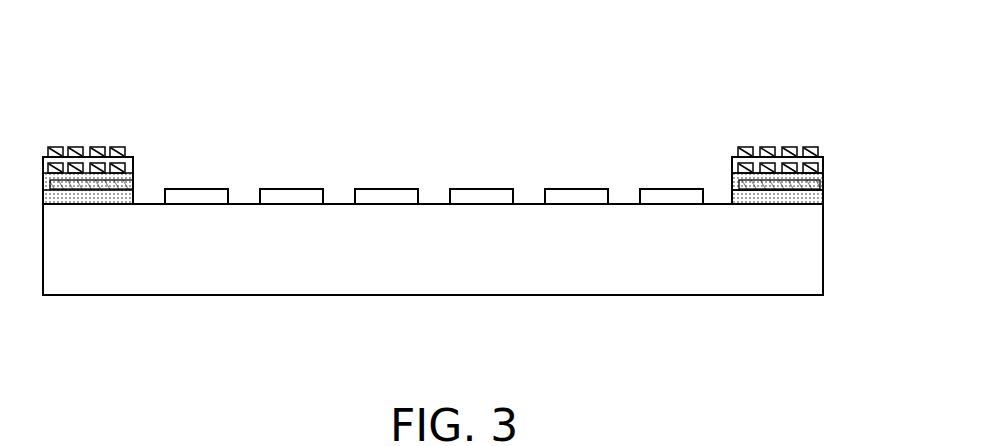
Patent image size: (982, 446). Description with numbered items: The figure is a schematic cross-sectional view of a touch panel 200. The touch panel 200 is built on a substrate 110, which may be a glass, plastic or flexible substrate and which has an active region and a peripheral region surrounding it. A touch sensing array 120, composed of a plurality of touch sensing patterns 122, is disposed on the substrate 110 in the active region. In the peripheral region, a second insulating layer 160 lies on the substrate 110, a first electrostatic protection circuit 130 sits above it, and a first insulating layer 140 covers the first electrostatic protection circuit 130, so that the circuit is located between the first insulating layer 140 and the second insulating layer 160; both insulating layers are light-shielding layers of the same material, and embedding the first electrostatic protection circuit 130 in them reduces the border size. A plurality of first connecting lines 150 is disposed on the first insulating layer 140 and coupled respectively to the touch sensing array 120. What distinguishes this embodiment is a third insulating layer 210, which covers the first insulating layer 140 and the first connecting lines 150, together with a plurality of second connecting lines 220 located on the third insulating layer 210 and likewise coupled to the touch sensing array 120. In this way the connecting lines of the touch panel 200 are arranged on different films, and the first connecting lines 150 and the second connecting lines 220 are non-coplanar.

The substrate 110 is at (813, 253).
The touch sensing array 120 is at (434, 151).
The touch sensing patterns 122 is at (592, 197).
The first electrostatic protection circuit 130 is at (825, 188).
The first insulating layer 140 is at (826, 178).
The first connecting lines 150 is at (826, 170).
The second insulating layer 160 is at (826, 202).
The touch panel 200 is at (823, 358).
The third insulating layer 210 is at (820, 160).
The second connecting lines 220 is at (811, 146).